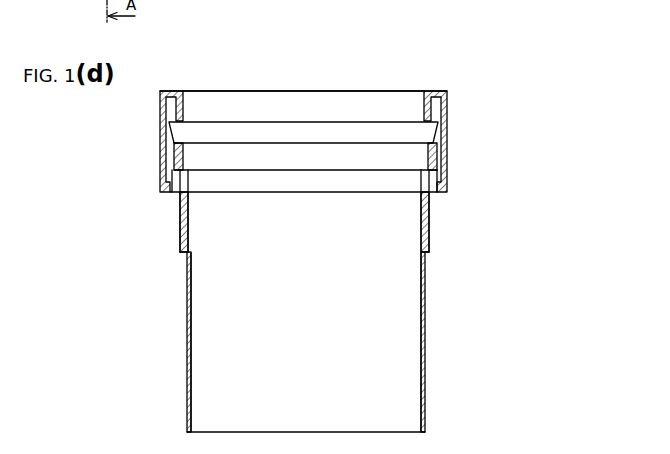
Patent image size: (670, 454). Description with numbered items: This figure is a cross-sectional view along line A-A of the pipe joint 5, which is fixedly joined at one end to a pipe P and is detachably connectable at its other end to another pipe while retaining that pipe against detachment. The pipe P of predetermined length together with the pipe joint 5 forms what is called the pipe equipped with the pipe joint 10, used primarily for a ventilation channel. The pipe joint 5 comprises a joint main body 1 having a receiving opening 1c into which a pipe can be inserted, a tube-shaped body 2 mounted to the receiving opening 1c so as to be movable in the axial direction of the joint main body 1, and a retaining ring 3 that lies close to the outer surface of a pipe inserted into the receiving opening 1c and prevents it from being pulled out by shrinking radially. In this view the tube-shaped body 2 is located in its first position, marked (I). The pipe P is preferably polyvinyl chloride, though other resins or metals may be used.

The joint main body 1 is at (160, 223).
The receiving opening 1c is at (417, 134).
The tube-shaped body 2 is at (454, 112).
The retaining ring 3 is at (196, 156).
The pipe joint 5 is at (434, 72).
The pipe equipped with the pipe joint 10 is at (482, 243).
The pipe P is at (426, 370).